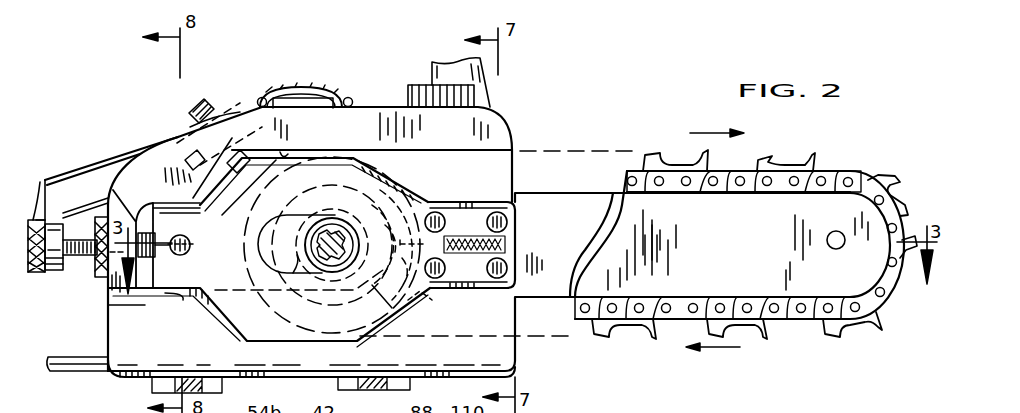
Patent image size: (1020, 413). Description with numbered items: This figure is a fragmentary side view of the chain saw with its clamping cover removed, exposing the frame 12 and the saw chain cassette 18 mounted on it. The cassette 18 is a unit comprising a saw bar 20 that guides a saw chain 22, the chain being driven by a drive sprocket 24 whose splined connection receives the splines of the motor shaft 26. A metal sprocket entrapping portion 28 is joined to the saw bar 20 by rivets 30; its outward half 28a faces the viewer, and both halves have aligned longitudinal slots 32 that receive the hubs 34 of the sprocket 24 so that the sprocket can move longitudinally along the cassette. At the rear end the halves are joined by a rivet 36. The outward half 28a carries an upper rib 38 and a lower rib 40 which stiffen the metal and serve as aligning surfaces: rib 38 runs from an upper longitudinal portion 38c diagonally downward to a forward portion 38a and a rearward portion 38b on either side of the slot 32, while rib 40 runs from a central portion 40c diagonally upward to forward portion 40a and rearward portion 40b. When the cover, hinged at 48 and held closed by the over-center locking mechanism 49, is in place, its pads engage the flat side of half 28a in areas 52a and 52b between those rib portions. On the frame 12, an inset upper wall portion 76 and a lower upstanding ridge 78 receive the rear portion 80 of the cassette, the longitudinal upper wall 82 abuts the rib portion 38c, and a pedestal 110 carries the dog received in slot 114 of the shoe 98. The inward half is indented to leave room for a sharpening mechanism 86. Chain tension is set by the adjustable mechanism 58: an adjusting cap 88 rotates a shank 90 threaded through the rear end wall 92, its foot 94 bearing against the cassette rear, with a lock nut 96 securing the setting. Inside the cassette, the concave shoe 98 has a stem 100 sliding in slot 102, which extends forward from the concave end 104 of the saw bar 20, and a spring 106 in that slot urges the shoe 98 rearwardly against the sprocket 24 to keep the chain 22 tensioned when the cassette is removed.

The chain saw housing or frame 12 is at (385, 107).
The saw chain cassette 18 is at (792, 328).
The saw bar 20 is at (468, 282).
The saw chain 22 is at (850, 178).
The drive sprocket 24 is at (283, 235).
The motor shaft 26 is at (332, 260).
The sprocket entrapping portion 28 is at (232, 198).
The outward half of the entrapping portion 28a is at (190, 127).
The rivets 30 is at (507, 222).
The longitudinal slots 32 is at (297, 275).
The hubs 34 is at (308, 233).
The rivet 36 is at (198, 238).
The upper edge ridge or rib 38 is at (271, 149).
The forward rib portion 38a is at (478, 202).
The rearward rib portion 38b is at (178, 203).
The upper longitudinal rib portion 38c is at (320, 149).
The lower edge ridge or rib 40 is at (309, 345).
The forward rib portion 40a is at (502, 295).
The rearward rib portion 40b is at (166, 297).
The central longitudinal rib portion 40c is at (282, 348).
The hinge attachment 48 is at (152, 388).
The over-center latching or locking mechanism 49 is at (313, 88).
The engagement area 52a is at (466, 245).
The engagement area 52b is at (110, 193).
The adjustable mechanism 58 is at (83, 283).
The inset upper wall portion 76 is at (157, 210).
The lower upstanding ridge 78 is at (183, 298).
The rear portion of the cassette 80 is at (134, 300).
The longitudinal upper wall 82 is at (289, 154).
The sharpening mechanism 86 is at (188, 102).
The adjusting cap 88 is at (33, 207).
The shank 90 is at (86, 214).
The rear end wall 92 is at (100, 296).
The foot 94 is at (188, 252).
The lock nut 96 is at (84, 277).
The shoe 98 is at (392, 290).
The stem 100 is at (427, 203).
The slot 102 is at (433, 306).
The concave end of saw bar 104 is at (400, 298).
The spring 106 is at (507, 244).
The pedestal 110 is at (449, 235).
The slot in shoe 114 is at (352, 206).